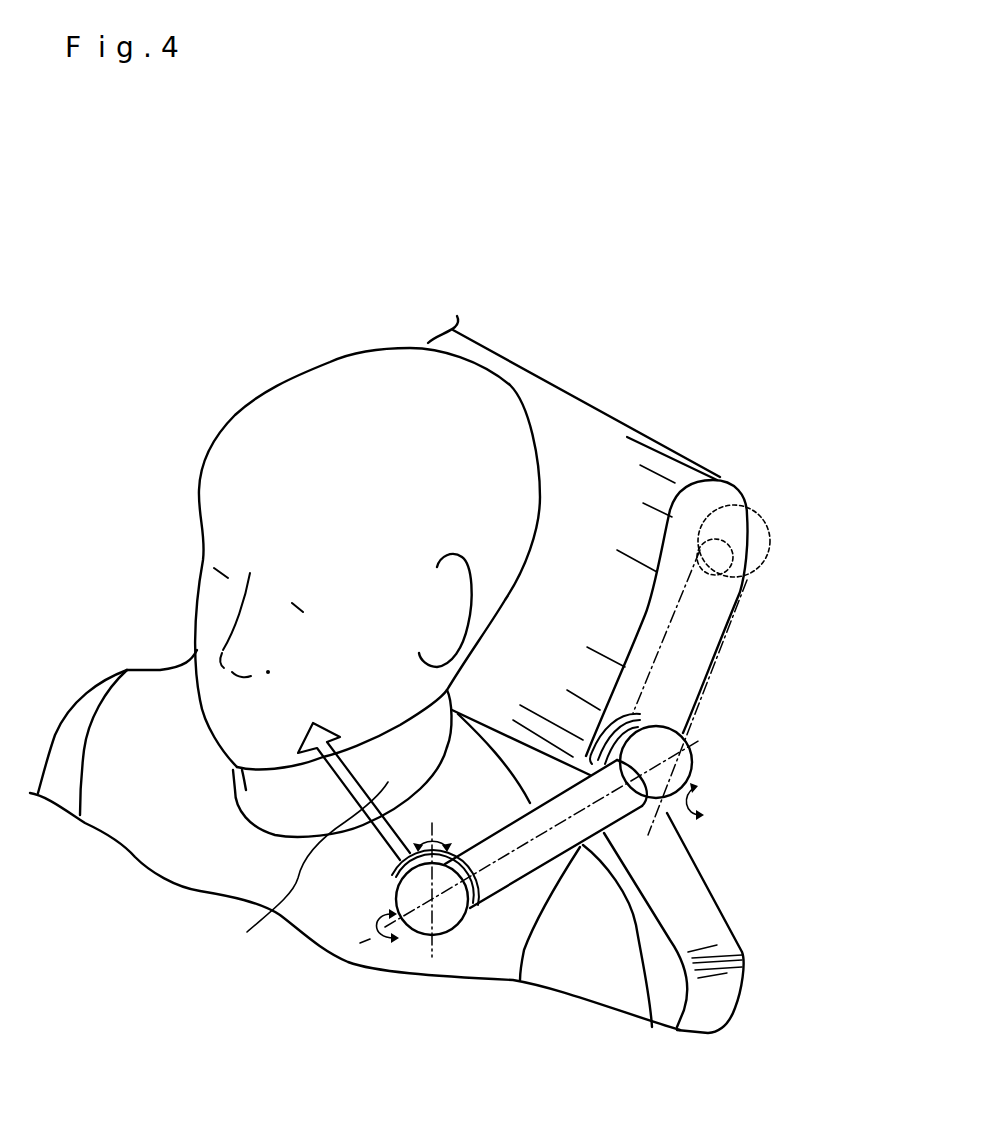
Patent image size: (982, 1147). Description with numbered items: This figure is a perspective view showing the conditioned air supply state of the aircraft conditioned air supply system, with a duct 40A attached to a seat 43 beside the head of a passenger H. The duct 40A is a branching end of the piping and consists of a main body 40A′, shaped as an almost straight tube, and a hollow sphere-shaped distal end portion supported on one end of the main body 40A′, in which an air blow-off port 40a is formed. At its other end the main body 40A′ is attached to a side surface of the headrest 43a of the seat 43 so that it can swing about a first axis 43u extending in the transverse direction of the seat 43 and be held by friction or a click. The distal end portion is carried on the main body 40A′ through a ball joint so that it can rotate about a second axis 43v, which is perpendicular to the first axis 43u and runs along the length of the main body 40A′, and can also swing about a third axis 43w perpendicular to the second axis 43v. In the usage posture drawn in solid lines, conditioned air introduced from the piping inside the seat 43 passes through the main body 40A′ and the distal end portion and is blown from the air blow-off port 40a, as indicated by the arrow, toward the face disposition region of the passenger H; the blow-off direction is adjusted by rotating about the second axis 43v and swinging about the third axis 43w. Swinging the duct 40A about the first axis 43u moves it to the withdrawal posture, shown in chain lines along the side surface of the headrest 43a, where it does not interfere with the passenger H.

The passenger H is at (310, 397).
The seat 43 is at (590, 427).
The headrest 43a is at (617, 437).
The air blow-off port 40a is at (750, 580).
The duct 40A is at (717, 668).
The main body 40A′ is at (502, 880).
The first axis 43u is at (668, 770).
The second axis 43v is at (385, 927).
The third axis 43w is at (432, 957).